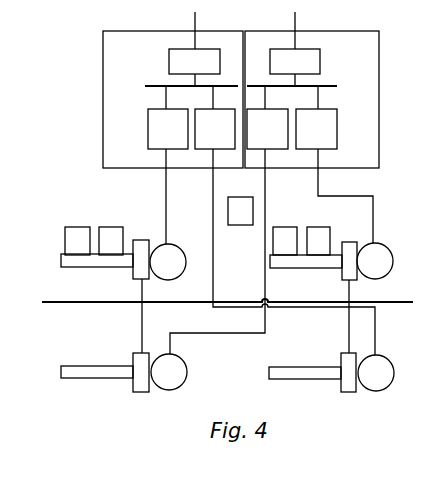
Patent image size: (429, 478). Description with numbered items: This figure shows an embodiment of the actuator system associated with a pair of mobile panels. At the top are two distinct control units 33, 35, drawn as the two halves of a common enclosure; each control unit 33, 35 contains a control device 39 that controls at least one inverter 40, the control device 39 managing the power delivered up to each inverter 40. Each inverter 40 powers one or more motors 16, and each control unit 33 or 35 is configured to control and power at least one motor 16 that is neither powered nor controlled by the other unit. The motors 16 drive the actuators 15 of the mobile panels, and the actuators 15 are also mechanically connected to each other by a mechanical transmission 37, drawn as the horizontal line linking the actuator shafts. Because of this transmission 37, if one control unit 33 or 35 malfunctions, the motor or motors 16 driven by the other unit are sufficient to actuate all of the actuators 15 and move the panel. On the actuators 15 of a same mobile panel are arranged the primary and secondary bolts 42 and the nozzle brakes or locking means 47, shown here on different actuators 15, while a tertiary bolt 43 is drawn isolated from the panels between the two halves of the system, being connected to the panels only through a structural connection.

The actuator 15 is at (62, 260).
The motor 16 is at (272, 317).
The control unit 33 is at (118, 93).
The control unit 35 is at (363, 93).
The mechanical transmission 37 is at (140, 298).
The control device 39 is at (244, 67).
The inverter 40 is at (242, 117).
The primary and secondary bolt 42 is at (181, 241).
The tertiary bolt 43 is at (240, 211).
The locking means 47 is at (214, 241).